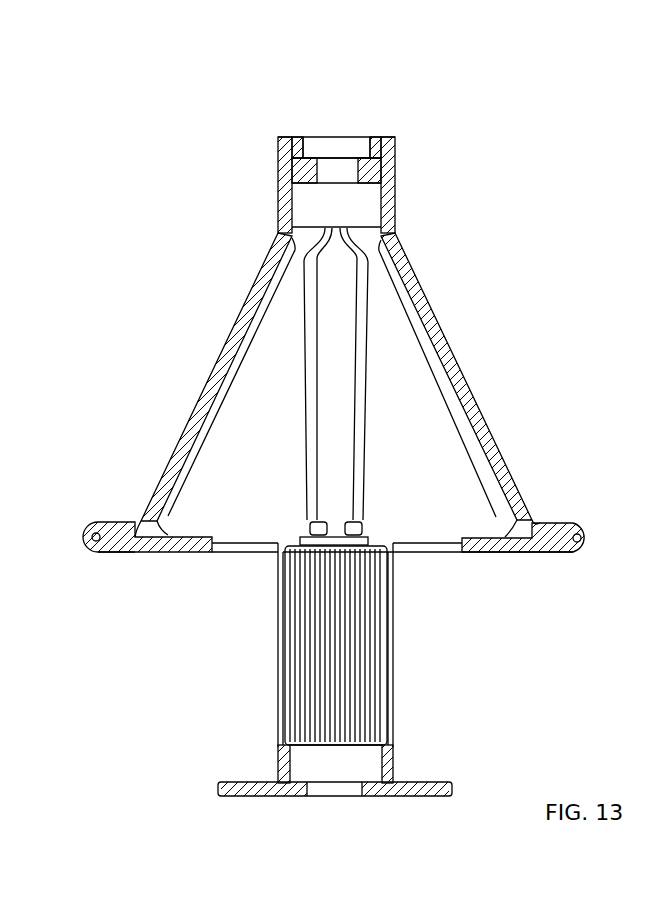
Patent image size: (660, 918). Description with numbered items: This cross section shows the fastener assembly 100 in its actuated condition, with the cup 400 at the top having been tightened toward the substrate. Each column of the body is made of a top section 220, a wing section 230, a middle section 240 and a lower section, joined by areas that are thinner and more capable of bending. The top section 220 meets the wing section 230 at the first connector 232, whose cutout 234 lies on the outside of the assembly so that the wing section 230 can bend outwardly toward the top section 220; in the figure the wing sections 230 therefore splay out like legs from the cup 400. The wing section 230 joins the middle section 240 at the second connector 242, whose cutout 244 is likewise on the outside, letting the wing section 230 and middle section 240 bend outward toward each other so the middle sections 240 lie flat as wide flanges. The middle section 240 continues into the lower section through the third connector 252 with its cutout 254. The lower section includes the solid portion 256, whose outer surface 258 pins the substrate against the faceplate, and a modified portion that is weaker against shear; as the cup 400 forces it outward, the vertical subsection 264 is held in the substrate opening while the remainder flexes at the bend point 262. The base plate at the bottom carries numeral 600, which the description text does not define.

The fastener assembly 100 is at (445, 66).
The cup 400 is at (277, 140).
The top section 220 is at (279, 187).
The wing section 230 is at (223, 343).
The first connector 232 is at (398, 236).
The cutout 234 is at (282, 236).
The middle section 240 is at (118, 525).
The second connector 242 is at (532, 517).
The cutout 244 is at (138, 520).
The third connector 252 is at (583, 523).
The cutout 254 is at (105, 550).
The solid portion 256 is at (517, 550).
The outer surface 258 is at (198, 553).
The bend point 262 is at (398, 548).
The vertical subsection 264 is at (392, 673).
The base plate 600 is at (240, 793).